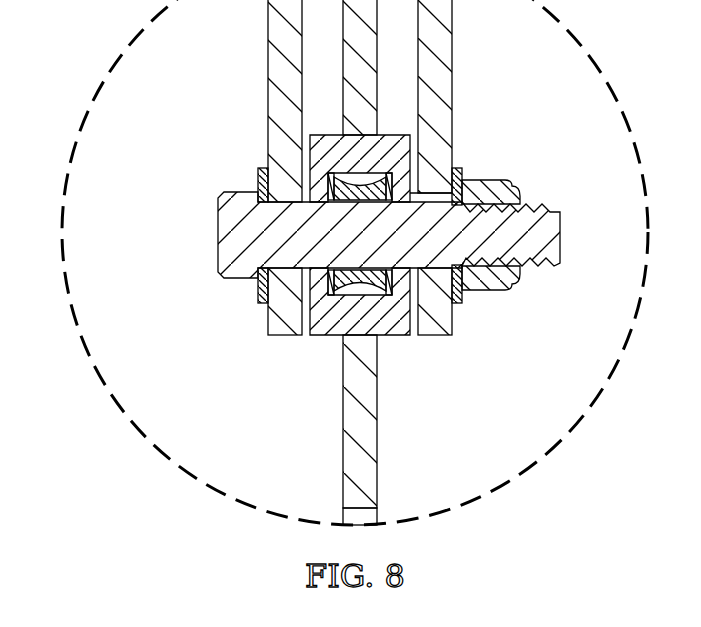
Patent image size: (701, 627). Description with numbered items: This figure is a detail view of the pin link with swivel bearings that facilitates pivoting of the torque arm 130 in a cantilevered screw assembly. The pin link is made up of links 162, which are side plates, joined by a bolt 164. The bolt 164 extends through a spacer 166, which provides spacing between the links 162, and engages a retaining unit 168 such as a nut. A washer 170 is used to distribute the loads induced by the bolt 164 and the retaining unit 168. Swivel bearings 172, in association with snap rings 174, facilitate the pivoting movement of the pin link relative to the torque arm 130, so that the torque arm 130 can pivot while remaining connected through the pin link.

The torque arm 130 is at (343, 450).
The links 162 is at (272, 96).
The bolt 164 is at (218, 231).
The spacer 166 is at (320, 270).
The retaining unit 168 is at (510, 190).
The washer 170 is at (463, 170).
The swivel bearing 172 is at (362, 273).
The snap ring 174 is at (310, 193).